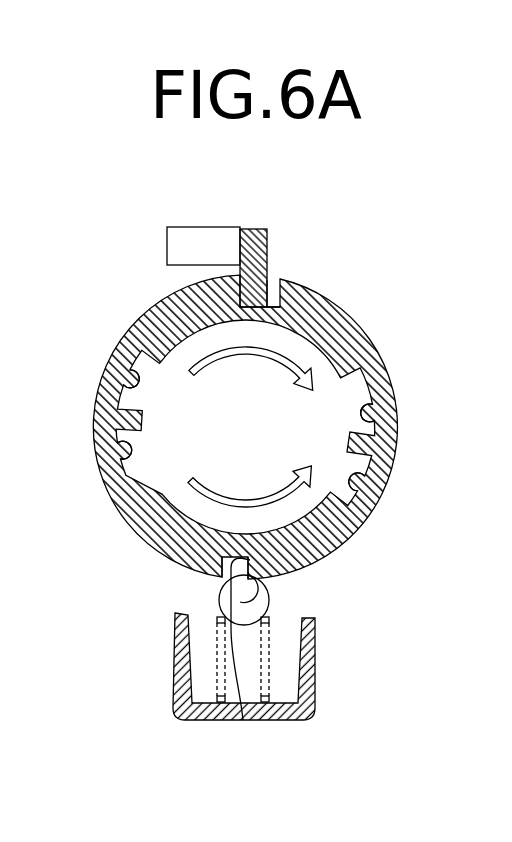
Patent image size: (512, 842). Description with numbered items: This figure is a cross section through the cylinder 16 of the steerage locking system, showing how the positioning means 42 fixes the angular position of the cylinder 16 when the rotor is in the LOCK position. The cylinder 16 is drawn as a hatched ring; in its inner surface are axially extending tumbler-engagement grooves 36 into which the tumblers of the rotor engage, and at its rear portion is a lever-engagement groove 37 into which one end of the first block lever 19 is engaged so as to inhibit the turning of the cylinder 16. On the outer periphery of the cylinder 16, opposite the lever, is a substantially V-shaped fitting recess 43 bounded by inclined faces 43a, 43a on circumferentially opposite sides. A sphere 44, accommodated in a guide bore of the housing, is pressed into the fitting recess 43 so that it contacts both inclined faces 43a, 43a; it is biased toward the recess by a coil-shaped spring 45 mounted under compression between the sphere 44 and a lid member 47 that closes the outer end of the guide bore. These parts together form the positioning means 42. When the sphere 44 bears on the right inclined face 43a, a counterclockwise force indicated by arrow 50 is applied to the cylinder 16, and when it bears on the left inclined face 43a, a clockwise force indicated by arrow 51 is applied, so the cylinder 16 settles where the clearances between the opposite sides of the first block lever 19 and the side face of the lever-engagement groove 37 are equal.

The cylinder 16 is at (350, 354).
The first block lever 19 is at (250, 233).
The tumbler-engagement grooves 36 is at (95, 463).
The lever-engagement groove 37 is at (273, 297).
The positioning means 42 is at (323, 672).
The fitting recess 43 is at (243, 717).
The inclined faces 43a is at (222, 578).
The sphere 44 is at (253, 600).
The spring 45 is at (282, 717).
The lid member 47 is at (173, 712).
The arrow 50 is at (227, 492).
The arrow 51 is at (247, 363).